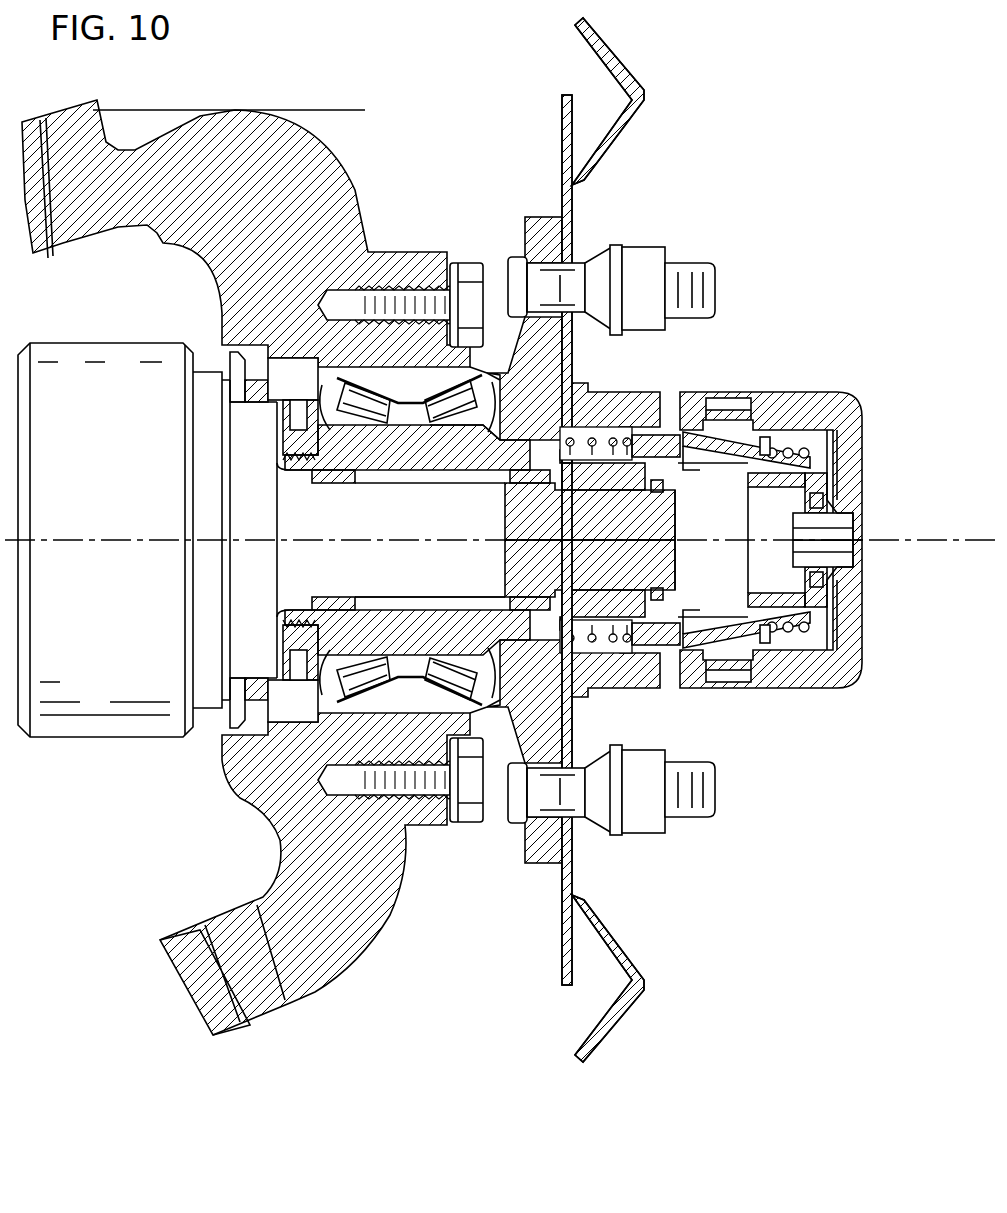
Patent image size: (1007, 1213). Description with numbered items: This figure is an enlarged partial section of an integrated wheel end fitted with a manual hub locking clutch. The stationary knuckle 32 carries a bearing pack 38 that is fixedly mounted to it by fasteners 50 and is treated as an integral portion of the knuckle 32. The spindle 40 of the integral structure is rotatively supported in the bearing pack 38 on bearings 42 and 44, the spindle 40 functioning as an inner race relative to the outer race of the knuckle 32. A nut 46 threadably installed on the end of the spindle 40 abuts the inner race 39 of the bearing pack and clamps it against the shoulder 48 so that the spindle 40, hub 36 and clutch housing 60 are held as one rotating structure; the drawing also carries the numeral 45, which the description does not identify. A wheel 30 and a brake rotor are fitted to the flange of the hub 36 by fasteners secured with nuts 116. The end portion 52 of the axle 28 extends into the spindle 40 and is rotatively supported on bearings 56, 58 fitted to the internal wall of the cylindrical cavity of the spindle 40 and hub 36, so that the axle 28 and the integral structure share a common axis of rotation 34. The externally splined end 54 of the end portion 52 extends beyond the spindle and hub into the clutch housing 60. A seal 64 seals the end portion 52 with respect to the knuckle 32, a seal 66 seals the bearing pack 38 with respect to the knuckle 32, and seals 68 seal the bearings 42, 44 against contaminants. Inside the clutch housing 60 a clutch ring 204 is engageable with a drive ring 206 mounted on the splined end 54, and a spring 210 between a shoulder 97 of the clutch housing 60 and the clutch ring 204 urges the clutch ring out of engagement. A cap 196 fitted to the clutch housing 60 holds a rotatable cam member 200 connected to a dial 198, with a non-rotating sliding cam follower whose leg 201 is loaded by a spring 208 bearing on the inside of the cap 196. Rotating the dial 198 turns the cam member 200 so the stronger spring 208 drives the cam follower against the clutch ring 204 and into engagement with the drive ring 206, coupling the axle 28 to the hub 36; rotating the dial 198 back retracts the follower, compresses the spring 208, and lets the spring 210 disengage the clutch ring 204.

The axle 28 is at (70, 738).
The wheel 30 is at (610, 62).
The knuckle 32 is at (248, 787).
The axis of rotation 34 is at (137, 538).
The hub 36 is at (522, 738).
The bearing pack 38 is at (428, 251).
The inner race 39 is at (430, 596).
The spindle 40 is at (402, 596).
The bearing 42 is at (360, 398).
The bearing 44 is at (432, 403).
The retaining element 45 is at (300, 398).
The nut 46 is at (309, 400).
The shoulder 48 is at (505, 425).
The fasteners 50 is at (478, 262).
The end portion 52 is at (398, 533).
The externally splined end 54 is at (618, 567).
The bearing 56 is at (333, 486).
The bearing 58 is at (529, 486).
The clutch housing 60 is at (680, 391).
The seal 64 is at (250, 403).
The seal 66 is at (409, 396).
The seals 68 is at (345, 418).
The shoulder 97 is at (570, 433).
The nuts 116 is at (640, 247).
The cap 196 is at (830, 394).
The dial 198 is at (845, 674).
The cam member 200 is at (778, 596).
The leg 201 is at (763, 437).
The clutch ring 204 is at (660, 447).
The drive ring 206 is at (598, 477).
The spring 208 is at (784, 450).
The spring 210 is at (613, 437).